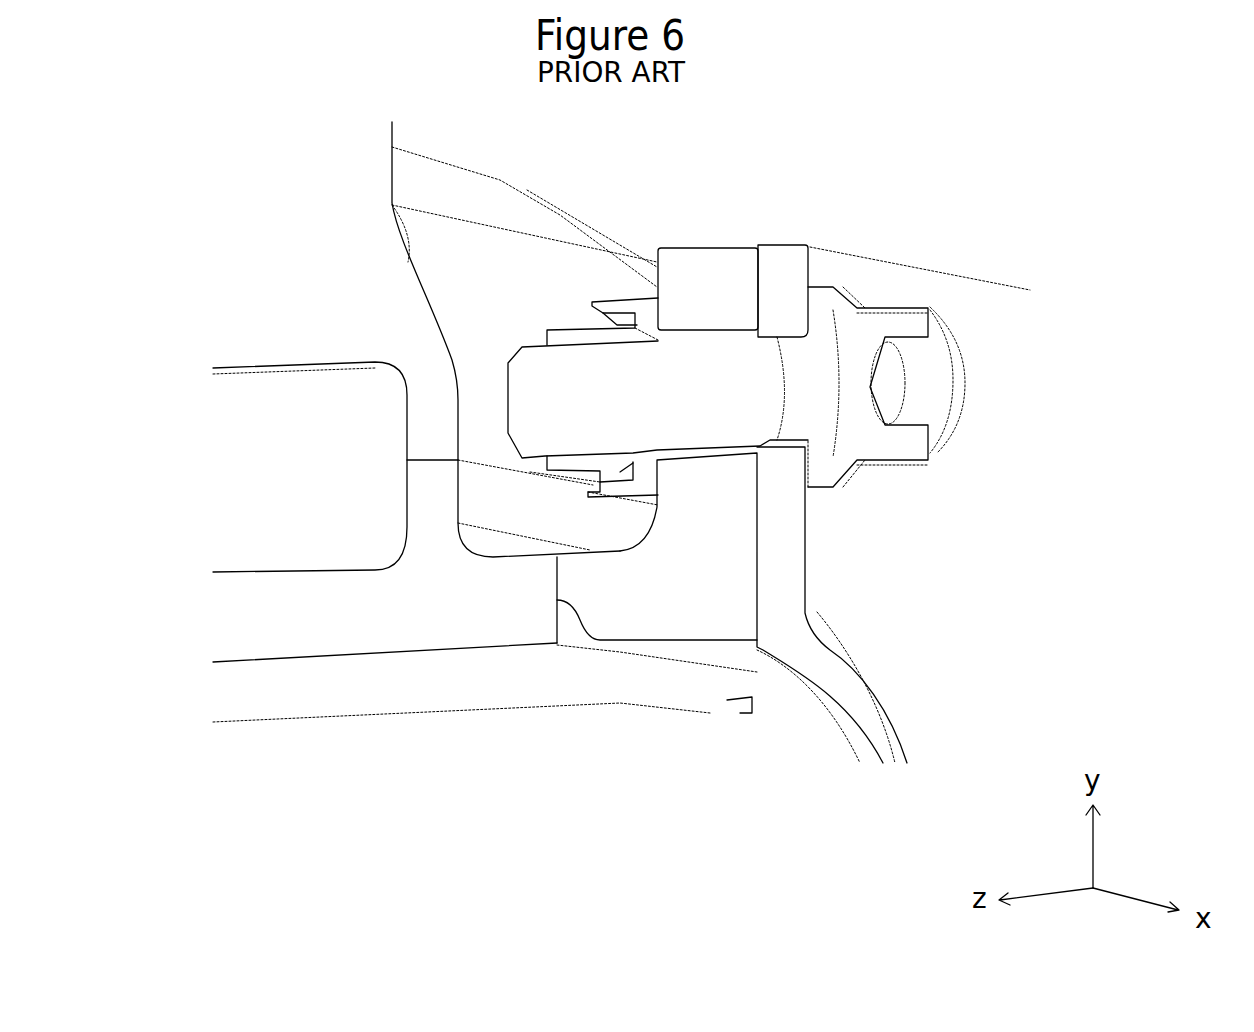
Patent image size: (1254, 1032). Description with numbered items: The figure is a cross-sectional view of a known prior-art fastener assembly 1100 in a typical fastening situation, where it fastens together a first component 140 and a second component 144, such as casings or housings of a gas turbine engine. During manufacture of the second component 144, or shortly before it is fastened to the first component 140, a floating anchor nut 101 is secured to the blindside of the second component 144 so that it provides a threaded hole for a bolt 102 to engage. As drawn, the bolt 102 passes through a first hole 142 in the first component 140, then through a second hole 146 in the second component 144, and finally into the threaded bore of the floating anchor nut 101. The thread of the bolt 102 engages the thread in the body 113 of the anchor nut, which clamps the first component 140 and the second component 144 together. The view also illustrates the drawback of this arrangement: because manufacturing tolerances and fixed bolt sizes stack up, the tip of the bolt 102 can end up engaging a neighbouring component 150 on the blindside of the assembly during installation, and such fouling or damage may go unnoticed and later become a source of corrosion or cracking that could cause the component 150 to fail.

The fastener assembly 1100 is at (461, 130).
The component 150 is at (363, 257).
The floating anchor nut 101 is at (522, 318).
The body 113 is at (583, 472).
The second component 144 is at (710, 283).
The first component 140 is at (778, 265).
The bolt 102 is at (919, 290).
The second hole 146 is at (697, 460).
The first hole 142 is at (778, 440).